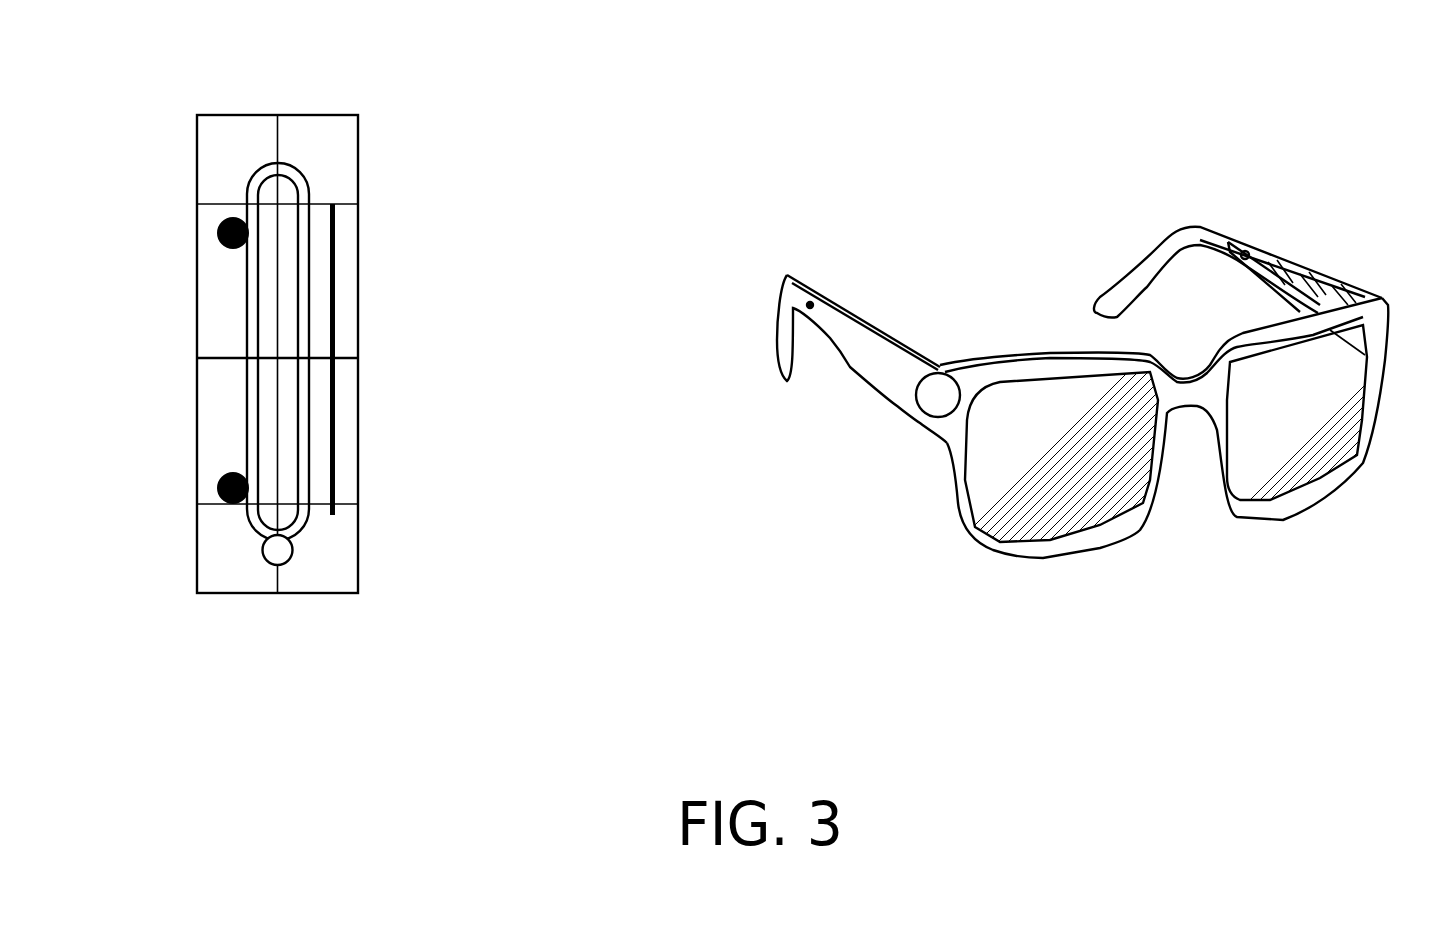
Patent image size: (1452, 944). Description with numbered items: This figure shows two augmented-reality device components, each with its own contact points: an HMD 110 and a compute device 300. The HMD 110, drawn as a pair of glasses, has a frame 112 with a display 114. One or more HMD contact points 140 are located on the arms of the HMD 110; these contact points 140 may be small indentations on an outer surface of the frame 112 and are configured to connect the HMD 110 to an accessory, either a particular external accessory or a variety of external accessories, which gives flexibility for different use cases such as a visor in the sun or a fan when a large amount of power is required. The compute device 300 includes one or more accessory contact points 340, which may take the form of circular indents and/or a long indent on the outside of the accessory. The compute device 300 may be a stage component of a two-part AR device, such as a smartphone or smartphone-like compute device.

The compute device 300 is at (385, 152).
The accessory contact points 340 is at (220, 233).
The HMD 110 is at (1114, 359).
The frame 112 is at (1145, 278).
The display 114 is at (987, 483).
The HMD contact points 140 is at (823, 298).